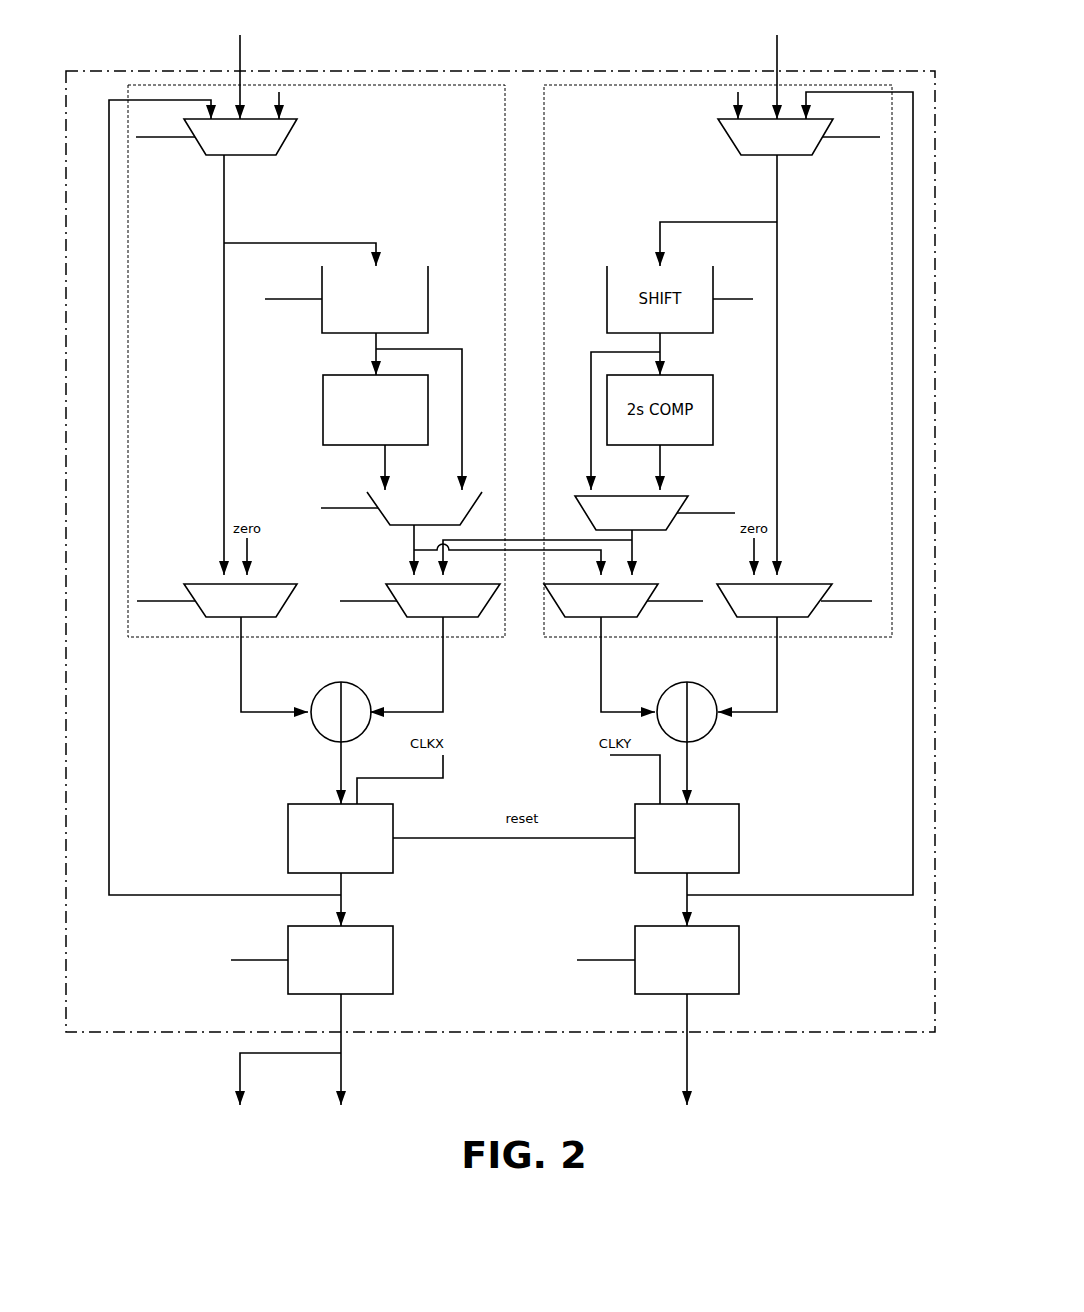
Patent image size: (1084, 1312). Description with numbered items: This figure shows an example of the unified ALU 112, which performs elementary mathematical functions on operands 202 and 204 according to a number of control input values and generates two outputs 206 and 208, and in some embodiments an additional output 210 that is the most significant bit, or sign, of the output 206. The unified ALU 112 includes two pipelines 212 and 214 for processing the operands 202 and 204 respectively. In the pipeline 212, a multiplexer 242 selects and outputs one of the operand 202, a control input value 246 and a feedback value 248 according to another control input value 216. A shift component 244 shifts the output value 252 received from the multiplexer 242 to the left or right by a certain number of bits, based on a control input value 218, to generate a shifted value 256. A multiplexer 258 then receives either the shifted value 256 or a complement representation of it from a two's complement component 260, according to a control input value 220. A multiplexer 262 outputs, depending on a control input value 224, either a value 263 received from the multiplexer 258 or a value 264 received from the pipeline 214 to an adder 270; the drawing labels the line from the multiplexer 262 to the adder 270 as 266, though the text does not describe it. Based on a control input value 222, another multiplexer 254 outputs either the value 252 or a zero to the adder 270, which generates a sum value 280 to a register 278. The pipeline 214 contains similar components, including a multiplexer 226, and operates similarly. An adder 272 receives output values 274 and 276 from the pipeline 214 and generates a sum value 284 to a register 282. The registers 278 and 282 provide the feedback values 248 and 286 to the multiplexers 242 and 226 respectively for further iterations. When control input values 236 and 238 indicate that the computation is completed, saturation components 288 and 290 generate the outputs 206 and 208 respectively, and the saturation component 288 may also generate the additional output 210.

The unified ALU 112 is at (105, 1102).
The operand 202 is at (243, 57).
The operand 204 is at (778, 63).
The output 206 is at (342, 1082).
The output 208 is at (688, 1067).
The additional output 210 is at (237, 1072).
The pipeline 212 is at (180, 638).
The pipeline 214 is at (863, 640).
The control input value 216 is at (167, 140).
The control input value 218 is at (293, 300).
The control input value 220 is at (342, 507).
The control input value 222 is at (177, 597).
The control input value 224 is at (372, 598).
The multiplexer 226 is at (817, 153).
The control input value 236 is at (253, 961).
The control input value 238 is at (600, 962).
The multiplexer 242 is at (287, 138).
The shift component 244 is at (428, 300).
The control input value 246 is at (283, 103).
The feedback value 248 is at (340, 903).
The output value 252 is at (225, 172).
The multiplexer 254 is at (288, 602).
The shifted value 256 is at (372, 347).
The multiplexer 258 is at (475, 507).
The two's complement component 260 is at (323, 410).
The multiplexer 262 is at (489, 605).
The value 263 is at (413, 537).
The value 264 is at (580, 540).
The multiplexer output 266 is at (445, 652).
The adder 270 is at (366, 692).
The adder 272 is at (712, 690).
The output value 274 is at (602, 693).
The output value 276 is at (778, 707).
The register 278 is at (288, 838).
The sum value 280 is at (340, 765).
The register 282 is at (740, 837).
The sum value 284 is at (688, 780).
The feedback value 286 is at (760, 893).
The saturation component 288 is at (397, 958).
The saturation component 290 is at (740, 958).